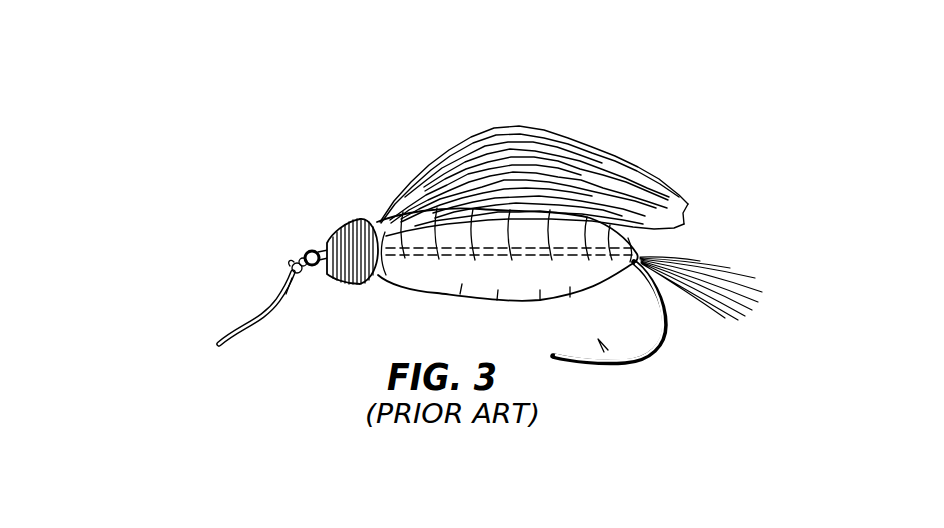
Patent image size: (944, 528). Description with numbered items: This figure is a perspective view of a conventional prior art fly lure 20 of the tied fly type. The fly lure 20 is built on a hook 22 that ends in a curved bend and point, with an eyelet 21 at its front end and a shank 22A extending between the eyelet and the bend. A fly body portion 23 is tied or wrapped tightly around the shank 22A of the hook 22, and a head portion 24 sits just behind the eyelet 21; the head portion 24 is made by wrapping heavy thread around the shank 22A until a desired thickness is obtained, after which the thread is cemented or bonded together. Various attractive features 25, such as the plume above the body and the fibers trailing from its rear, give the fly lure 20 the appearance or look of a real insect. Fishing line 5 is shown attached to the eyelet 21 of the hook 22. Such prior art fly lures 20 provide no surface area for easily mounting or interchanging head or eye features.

The fly lure 20 is at (636, 122).
The fishing line 5 is at (243, 313).
The eyelet 21 is at (305, 249).
The hook 22 is at (641, 364).
The shank 22A is at (322, 248).
The fly body portion 23 is at (487, 290).
The head portion 24 is at (347, 284).
The attractive features 25 is at (460, 160).